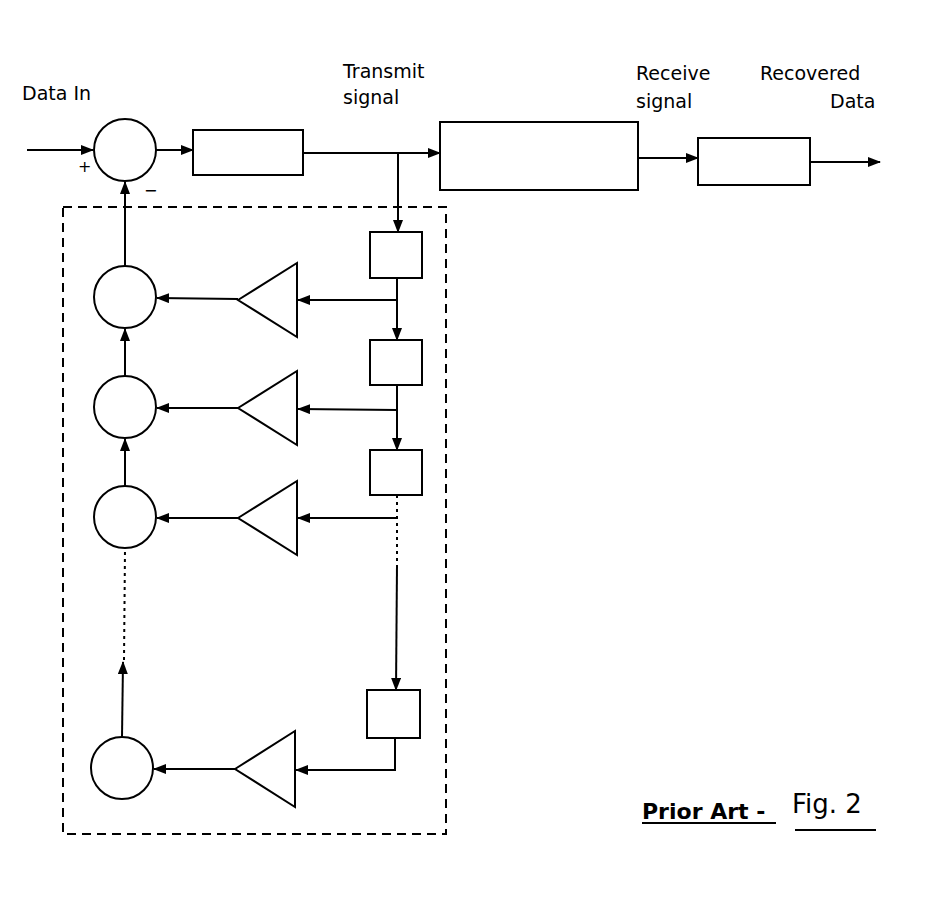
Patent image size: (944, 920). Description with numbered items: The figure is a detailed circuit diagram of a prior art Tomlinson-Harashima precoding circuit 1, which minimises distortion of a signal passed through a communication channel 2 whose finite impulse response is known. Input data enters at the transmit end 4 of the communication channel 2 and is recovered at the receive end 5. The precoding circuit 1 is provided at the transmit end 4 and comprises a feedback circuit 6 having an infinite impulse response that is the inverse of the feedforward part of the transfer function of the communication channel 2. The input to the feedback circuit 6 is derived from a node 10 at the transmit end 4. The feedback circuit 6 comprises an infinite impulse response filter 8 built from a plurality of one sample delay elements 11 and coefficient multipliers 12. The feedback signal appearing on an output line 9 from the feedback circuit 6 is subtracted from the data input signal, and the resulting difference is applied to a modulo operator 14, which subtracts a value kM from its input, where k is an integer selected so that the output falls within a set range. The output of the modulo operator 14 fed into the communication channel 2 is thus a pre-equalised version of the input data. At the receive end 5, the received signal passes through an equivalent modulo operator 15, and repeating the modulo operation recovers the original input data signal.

The Tomlinson-Harashima precoding circuit 1 is at (53, 452).
The communication channel 2 is at (555, 192).
The transmit end 4 is at (147, 88).
The receive end 5 is at (799, 199).
The feedback circuit 6 is at (57, 642).
The infinite impulse response filter 8 is at (446, 775).
The output line 9 is at (118, 204).
The node 10 is at (396, 151).
The one sample delay elements 11 is at (424, 490).
The coefficient multipliers 12 is at (265, 537).
The modulo operator 14 is at (263, 129).
The modulo operator 15 is at (725, 187).